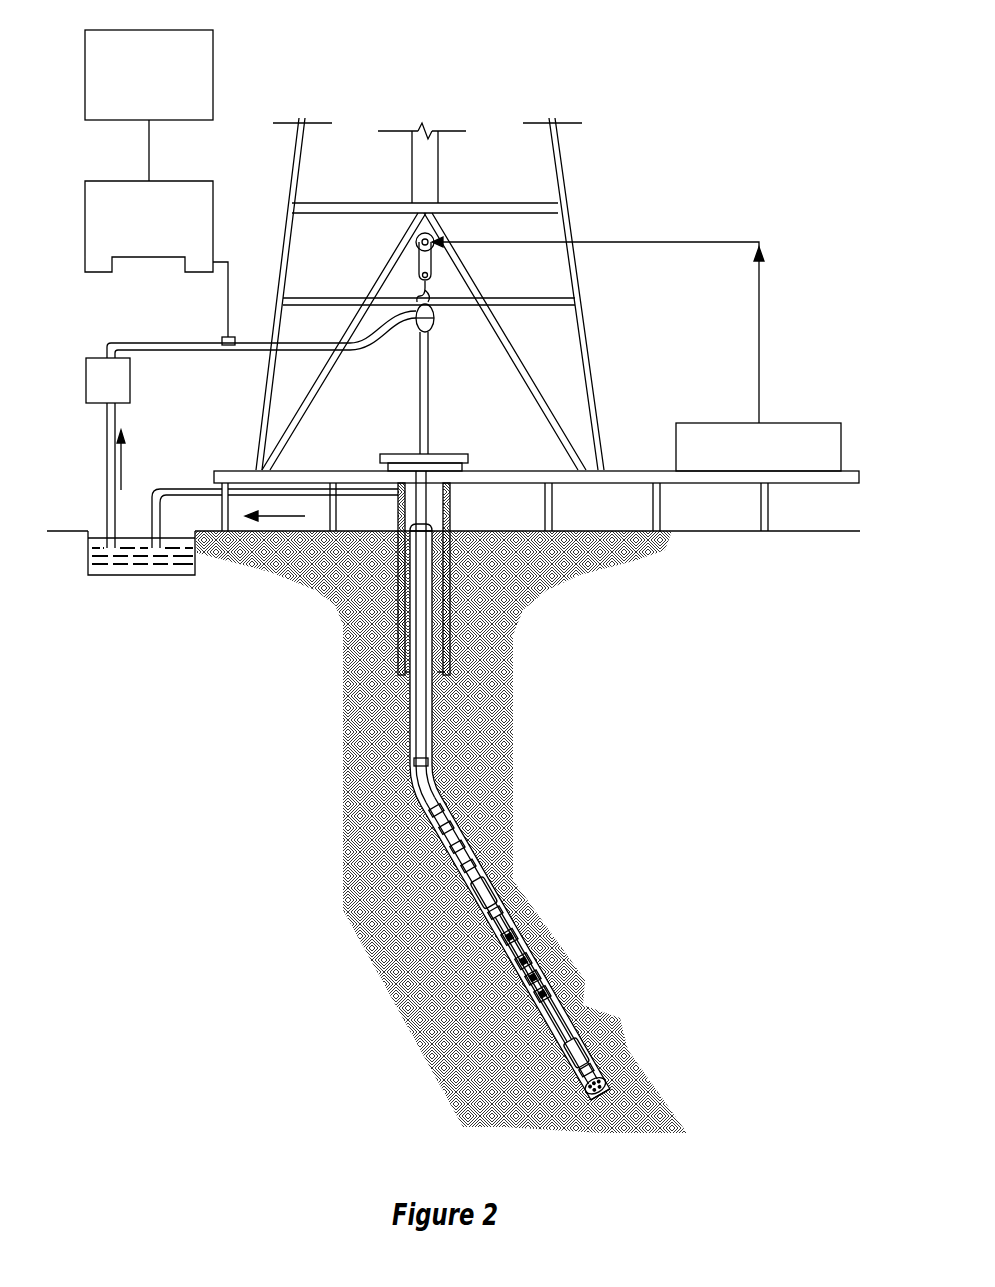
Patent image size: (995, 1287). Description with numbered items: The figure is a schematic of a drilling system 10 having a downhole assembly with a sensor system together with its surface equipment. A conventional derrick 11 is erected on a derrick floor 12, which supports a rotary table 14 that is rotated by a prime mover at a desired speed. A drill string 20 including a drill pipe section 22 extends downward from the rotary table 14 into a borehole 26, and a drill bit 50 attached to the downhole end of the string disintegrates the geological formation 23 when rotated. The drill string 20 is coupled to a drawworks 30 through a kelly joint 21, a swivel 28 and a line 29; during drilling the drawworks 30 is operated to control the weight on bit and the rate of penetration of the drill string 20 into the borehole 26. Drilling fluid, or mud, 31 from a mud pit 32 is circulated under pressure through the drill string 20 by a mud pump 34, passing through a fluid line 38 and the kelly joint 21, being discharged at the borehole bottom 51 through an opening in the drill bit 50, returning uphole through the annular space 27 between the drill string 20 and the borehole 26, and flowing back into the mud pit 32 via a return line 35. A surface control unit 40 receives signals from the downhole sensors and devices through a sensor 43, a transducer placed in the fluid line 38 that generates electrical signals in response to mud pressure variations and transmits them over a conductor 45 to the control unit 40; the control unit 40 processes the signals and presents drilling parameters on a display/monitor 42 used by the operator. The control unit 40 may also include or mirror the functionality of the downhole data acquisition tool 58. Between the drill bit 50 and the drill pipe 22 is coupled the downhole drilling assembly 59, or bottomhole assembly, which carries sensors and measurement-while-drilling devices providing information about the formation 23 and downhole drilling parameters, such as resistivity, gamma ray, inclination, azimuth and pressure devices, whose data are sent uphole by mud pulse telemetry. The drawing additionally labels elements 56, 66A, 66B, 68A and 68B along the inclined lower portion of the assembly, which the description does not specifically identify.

The drilling system 10 is at (350, 66).
The derrick 11 is at (592, 348).
The derrick floor 12 is at (608, 471).
The rotary table 14 is at (436, 454).
The drill string 20 is at (435, 663).
The kelly joint 21 is at (430, 356).
The drill pipe section 22 is at (415, 694).
The geological formation 23 is at (636, 1016).
The borehole 26 is at (445, 777).
The annular space 27 is at (450, 815).
The swivel 28 is at (412, 330).
The line 29 is at (438, 172).
The drawworks 30 is at (822, 423).
The drilling fluid 31 is at (110, 565).
The mud pit 32 is at (153, 570).
The mud pump 34 is at (108, 380).
The return line 35 is at (337, 497).
The fluid line 38 is at (103, 417).
The surface control unit 40 is at (100, 181).
The display/monitor 42 is at (100, 30).
The sensor 43 is at (228, 333).
The conductor 45 is at (224, 272).
The drill bit 50 is at (587, 1088).
The borehole bottom 51 is at (577, 1105).
The drilling motor / sub 56 is at (493, 886).
The downhole data acquisition tool 58 is at (588, 1062).
The downhole drilling assembly 59 is at (604, 734).
The sensor 66A is at (500, 940).
The sensor 66B is at (533, 995).
The sensor 68A is at (520, 965).
The sensor 68B is at (540, 975).